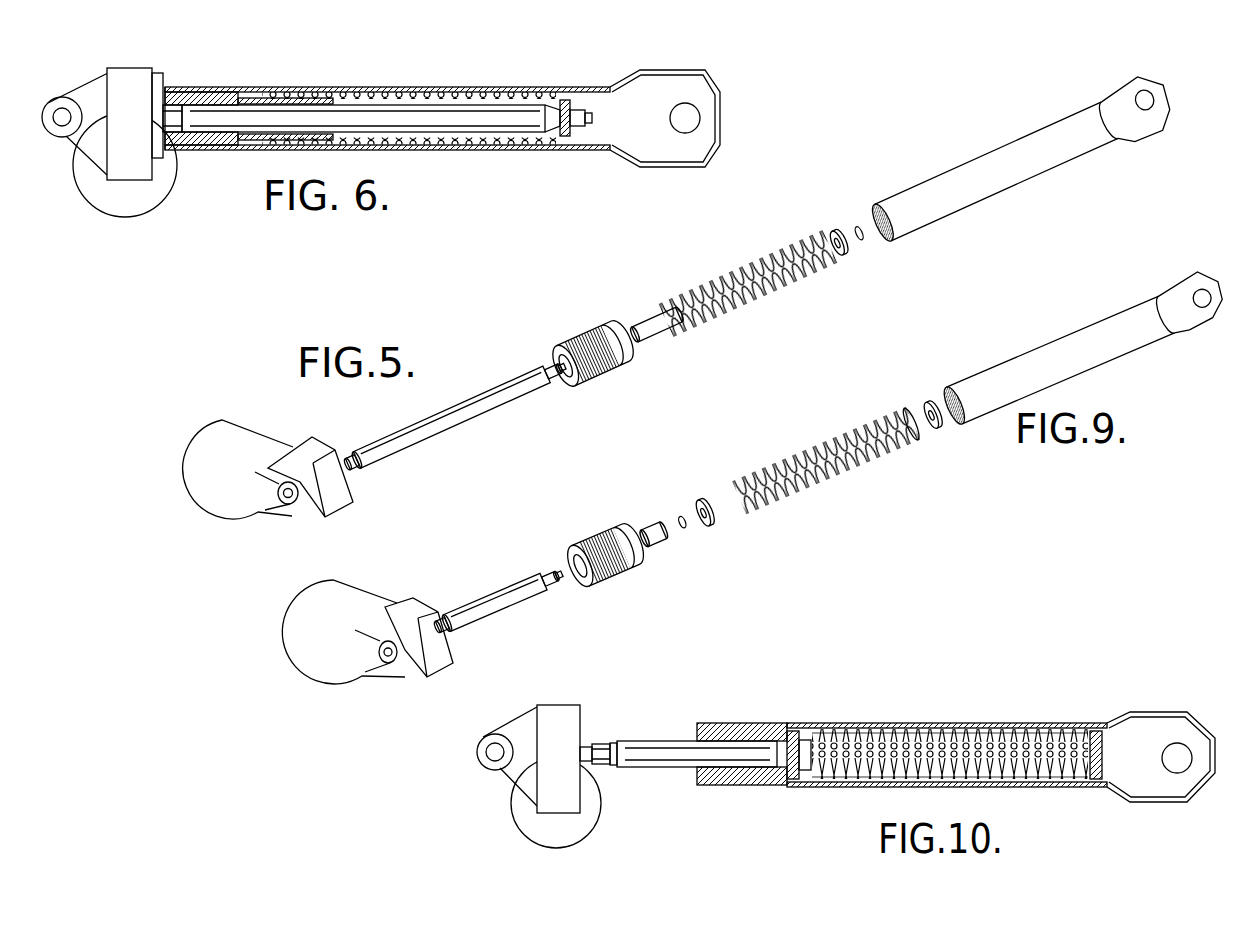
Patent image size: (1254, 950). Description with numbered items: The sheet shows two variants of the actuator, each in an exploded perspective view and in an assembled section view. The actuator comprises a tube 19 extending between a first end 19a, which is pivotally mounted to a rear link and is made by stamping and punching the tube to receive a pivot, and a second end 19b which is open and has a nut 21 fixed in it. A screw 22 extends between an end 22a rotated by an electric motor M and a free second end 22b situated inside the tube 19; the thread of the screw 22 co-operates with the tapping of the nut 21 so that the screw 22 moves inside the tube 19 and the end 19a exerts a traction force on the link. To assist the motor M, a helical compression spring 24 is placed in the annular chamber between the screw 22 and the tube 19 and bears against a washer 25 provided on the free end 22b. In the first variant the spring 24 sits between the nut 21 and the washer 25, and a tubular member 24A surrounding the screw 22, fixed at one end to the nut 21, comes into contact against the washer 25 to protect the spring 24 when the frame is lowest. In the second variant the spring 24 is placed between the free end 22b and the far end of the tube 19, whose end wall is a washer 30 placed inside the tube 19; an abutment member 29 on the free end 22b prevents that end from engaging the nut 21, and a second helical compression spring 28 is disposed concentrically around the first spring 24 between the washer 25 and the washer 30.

In FIG. 6, the electric motor M is at (130, 195).
In FIG. 5, the electric motor M is at (223, 473).
In FIG. 9, the electric motor M is at (332, 638).
In FIG. 10, the electric motor M is at (520, 812).
In FIG. 6, the tube 19 is at (532, 87).
In FIG. 5, the tube 19 is at (975, 173).
In FIG. 9, the tube 19 is at (1095, 345).
In FIG. 10, the tube 19 is at (953, 725).
In FIG. 6, the first end of the tube 19a is at (690, 72).
In FIG. 5, the first end of the tube 19a is at (1138, 123).
In FIG. 9, the first end of the tube 19a is at (1180, 323).
In FIG. 10, the first end of the tube 19a is at (1153, 712).
In FIG. 6, the second end of the tube 19b is at (207, 150).
In FIG. 5, the second end of the tube 19b is at (892, 213).
In FIG. 9, the second end of the tube 19b is at (968, 388).
In FIG. 6, the nut 21 is at (208, 90).
In FIG. 5, the nut 21 is at (590, 340).
In FIG. 9, the nut 21 is at (618, 572).
In FIG. 10, the nut 21 is at (703, 732).
In FIG. 6, the screw 22 is at (495, 118).
In FIG. 5, the screw 22 is at (477, 410).
In FIG. 9, the screw 22 is at (493, 607).
In FIG. 10, the screw 22 is at (637, 755).
In FIG. 5, the end of the screw 22a is at (360, 465).
In FIG. 6, the free end of the screw 22b is at (577, 128).
In FIG. 5, the free end of the screw 22b is at (543, 372).
In FIG. 9, the free end of the screw 22b is at (557, 585).
In FIG. 6, the compression spring 24 is at (415, 95).
In FIG. 5, the compression spring 24 is at (737, 277).
In FIG. 9, the compression spring 24 is at (817, 483).
In FIG. 10, the compression spring 24 is at (1053, 783).
In FIG. 6, the tubular member 24A is at (318, 98).
In FIG. 5, the tubular member 24A is at (655, 327).
In FIG. 6, the washer 25 is at (573, 140).
In FIG. 5, the washer 25 is at (830, 233).
In FIG. 9, the washer 25 is at (713, 520).
In FIG. 10, the washer 25 is at (795, 730).
In FIG. 9, the second helical compression spring 28 is at (907, 435).
In FIG. 10, the second helical compression spring 28 is at (1000, 727).
In FIG. 9, the abutment member 29 is at (667, 547).
In FIG. 10, the abutment member 29 is at (803, 780).
In FIG. 9, the washer 30 is at (923, 402).
In FIG. 10, the washer 30 is at (1102, 753).